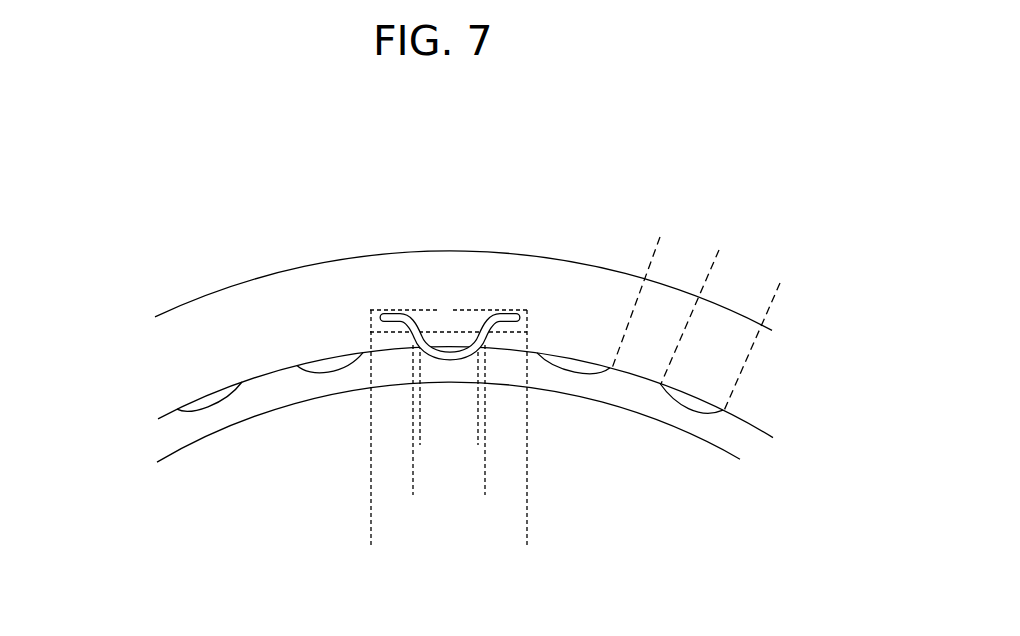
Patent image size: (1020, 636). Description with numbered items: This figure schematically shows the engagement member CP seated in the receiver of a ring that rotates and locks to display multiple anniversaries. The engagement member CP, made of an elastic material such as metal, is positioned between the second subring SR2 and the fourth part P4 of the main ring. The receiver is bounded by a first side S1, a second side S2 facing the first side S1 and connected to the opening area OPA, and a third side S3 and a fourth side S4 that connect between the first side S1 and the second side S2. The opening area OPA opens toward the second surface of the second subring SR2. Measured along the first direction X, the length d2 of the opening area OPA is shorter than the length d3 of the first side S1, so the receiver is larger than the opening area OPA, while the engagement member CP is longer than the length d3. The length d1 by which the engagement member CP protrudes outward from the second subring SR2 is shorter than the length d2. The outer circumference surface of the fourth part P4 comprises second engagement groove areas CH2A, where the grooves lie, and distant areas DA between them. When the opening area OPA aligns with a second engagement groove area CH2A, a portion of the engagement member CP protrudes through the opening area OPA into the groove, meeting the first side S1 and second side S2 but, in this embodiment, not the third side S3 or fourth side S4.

The first side S1 is at (444, 305).
The second side S2 is at (375, 337).
The third side S3 is at (529, 320).
The fourth side S4 is at (391, 332).
The engagement member CP is at (470, 348).
The second subring SR2 is at (236, 342).
The fourth part P4 is at (234, 413).
The opening area OPA is at (455, 344).
The protruding length of the engagement member d1 is at (478, 438).
The length of the opening area d2 is at (485, 487).
The length of the first side d3 is at (527, 533).
The distant area DA is at (709, 273).
The second engagement groove area CH2A is at (769, 298).
The first direction X is at (163, 592).